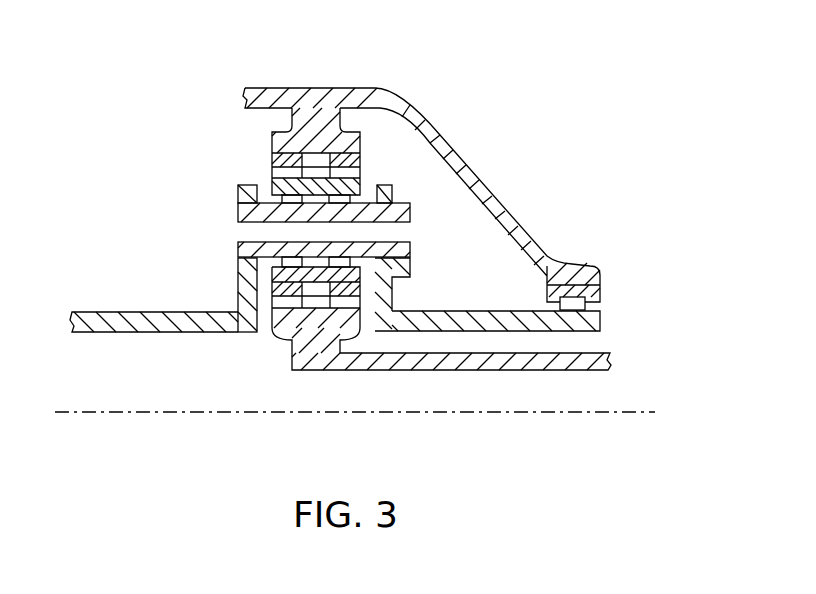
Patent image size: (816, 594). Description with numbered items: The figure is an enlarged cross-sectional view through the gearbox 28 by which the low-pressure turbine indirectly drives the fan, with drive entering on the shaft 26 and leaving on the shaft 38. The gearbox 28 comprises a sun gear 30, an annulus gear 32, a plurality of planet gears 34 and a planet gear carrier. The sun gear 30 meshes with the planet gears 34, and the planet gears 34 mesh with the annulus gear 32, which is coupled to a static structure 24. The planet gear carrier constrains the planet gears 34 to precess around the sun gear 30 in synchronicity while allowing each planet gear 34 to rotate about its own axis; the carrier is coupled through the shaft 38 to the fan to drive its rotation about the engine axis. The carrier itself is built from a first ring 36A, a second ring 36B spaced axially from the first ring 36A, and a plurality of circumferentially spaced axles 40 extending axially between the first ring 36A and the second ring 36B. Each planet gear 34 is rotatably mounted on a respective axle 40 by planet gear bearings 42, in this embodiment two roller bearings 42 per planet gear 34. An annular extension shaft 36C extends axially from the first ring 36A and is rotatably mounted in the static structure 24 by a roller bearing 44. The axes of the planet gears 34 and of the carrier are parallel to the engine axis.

The static structure 24 is at (357, 93).
The shaft 26 is at (483, 363).
The gearbox 28 is at (196, 375).
The sun gear 30 is at (285, 305).
The annulus gear 32 is at (333, 143).
The planet gear 34 is at (352, 188).
The first ring 36A is at (385, 292).
The second ring 36B is at (237, 278).
The extension shaft 36C is at (520, 313).
The shaft 38 is at (110, 332).
The axle 40 is at (237, 217).
The planet gear bearing 42 is at (237, 253).
The roller bearing 44 is at (600, 303).